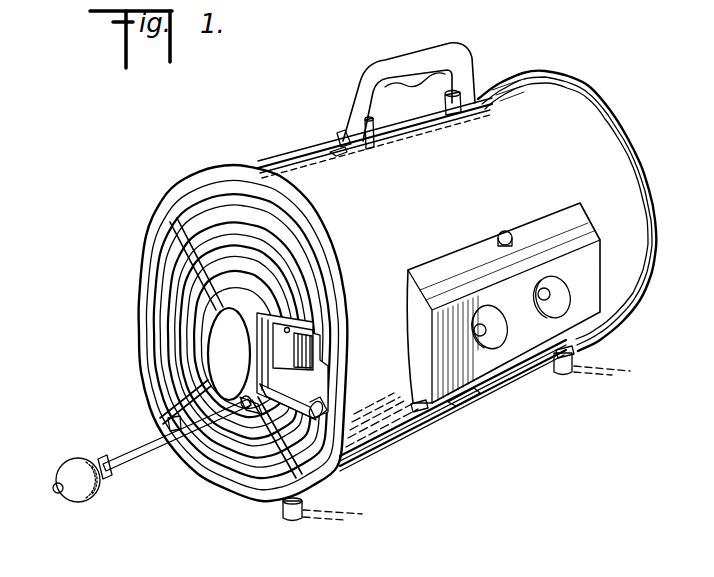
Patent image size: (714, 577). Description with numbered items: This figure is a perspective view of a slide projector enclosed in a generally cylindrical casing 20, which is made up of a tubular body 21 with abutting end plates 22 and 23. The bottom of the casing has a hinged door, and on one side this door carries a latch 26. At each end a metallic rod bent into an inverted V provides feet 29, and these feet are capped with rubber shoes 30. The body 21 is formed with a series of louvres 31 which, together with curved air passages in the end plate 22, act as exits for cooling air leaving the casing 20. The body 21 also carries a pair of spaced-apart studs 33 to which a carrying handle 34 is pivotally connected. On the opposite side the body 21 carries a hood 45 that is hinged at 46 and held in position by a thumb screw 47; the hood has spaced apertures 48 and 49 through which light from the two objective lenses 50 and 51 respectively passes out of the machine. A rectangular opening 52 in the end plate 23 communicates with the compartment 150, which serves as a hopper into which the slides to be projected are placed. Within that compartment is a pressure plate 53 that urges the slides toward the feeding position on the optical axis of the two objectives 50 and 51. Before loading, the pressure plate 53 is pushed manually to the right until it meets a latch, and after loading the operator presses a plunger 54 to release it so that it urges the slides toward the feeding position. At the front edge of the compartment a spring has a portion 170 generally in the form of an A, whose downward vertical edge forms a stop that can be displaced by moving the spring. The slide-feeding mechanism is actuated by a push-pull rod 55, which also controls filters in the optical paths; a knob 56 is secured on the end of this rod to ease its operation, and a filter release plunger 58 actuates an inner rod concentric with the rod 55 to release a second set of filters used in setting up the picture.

The cylindrical casing 20 is at (335, 147).
The tubular body 21 is at (390, 414).
The end plate 22 is at (604, 108).
The end plate 23 is at (147, 237).
The latch 26 is at (466, 409).
The feet 29 is at (578, 354).
The shoes 30 is at (575, 372).
The louvres 31 is at (275, 163).
The studs 33 is at (373, 126).
The carrying handle 34 is at (420, 58).
The hood 45 is at (597, 256).
The hinge 46 is at (422, 413).
The thumb screw 47 is at (505, 232).
The aperture 48 is at (573, 283).
The aperture 49 is at (505, 318).
The objective lens 50 is at (539, 291).
The objective lens 51 is at (473, 343).
The rectangular opening 52 is at (289, 328).
The pressure plate 53 is at (309, 353).
The plunger 54 is at (323, 404).
The push-pull rod 55 is at (148, 449).
The knob 56 is at (70, 470).
The filter release plunger 58 is at (56, 494).
The compartment 150 is at (303, 383).
The A-shaped portion 170 is at (287, 413).